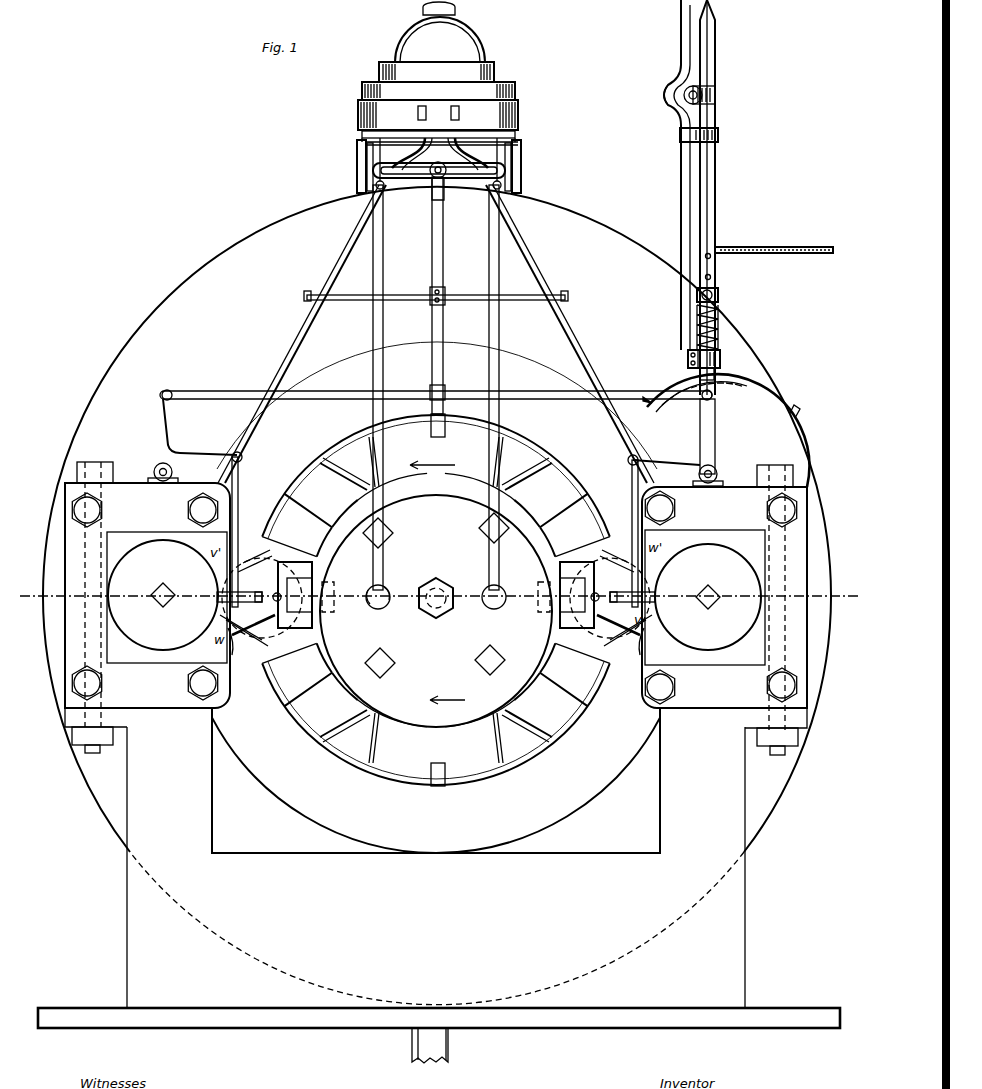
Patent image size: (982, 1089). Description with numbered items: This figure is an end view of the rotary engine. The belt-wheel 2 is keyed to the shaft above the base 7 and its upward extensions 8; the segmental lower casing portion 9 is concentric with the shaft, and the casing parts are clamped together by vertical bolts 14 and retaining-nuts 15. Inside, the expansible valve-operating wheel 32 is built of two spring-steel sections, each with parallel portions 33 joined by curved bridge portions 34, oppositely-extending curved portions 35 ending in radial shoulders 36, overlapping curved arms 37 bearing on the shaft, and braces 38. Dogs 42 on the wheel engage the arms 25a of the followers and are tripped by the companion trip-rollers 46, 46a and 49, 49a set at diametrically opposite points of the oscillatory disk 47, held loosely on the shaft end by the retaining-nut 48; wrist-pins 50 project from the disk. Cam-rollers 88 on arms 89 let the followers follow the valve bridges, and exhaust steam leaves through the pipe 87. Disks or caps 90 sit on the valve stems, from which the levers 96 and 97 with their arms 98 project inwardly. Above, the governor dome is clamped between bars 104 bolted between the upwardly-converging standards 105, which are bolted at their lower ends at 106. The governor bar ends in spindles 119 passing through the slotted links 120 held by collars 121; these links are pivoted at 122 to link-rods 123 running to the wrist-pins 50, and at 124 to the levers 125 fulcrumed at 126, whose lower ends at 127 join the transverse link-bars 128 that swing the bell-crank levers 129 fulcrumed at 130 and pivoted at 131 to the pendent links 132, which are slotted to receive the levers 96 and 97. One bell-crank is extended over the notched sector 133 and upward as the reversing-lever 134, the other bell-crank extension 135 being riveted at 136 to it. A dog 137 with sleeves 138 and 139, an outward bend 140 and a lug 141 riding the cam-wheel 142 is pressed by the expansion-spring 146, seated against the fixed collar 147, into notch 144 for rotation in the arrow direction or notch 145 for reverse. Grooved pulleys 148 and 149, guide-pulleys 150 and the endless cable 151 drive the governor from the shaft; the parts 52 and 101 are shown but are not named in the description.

The belt-wheel 2 is at (440, 597).
The base 7 is at (437, 596).
The upward extensions 8 is at (436, 867).
The lower portion of the engine-casing 9 is at (436, 780).
The vertical bolts 14 is at (93, 468).
The retaining-nuts 15 is at (78, 738).
The arms or extensions of the followers 25a is at (333, 598).
The expansible and contractible valve-operating wheel 32 is at (458, 782).
The parallel portions 33 is at (436, 600).
The curved bridge portions 34 is at (642, 595).
The oppositely-extending portions 35 is at (438, 600).
The radial ends or shoulders 36 is at (432, 600).
The curved arms 37 is at (440, 600).
The braces 38 is at (439, 610).
The dogs or hooks 42 is at (436, 598).
The trip-roller 46 is at (502, 533).
The trip-roller 46a is at (381, 672).
The oscillatory disk 47 is at (436, 611).
The retaining-nut 48 is at (436, 598).
The trip-roller 49 is at (368, 540).
The trip-roller 49a is at (490, 670).
The wrist or pivot pins 50 is at (366, 600).
The bolt 52 is at (434, 597).
The exhaust-pipe 87 is at (439, 1035).
The cam-rollers 88 is at (436, 546).
The arms 89 is at (245, 645).
The disks or caps 90 is at (436, 595).
The lever 96 is at (655, 597).
The lever 97 is at (217, 597).
The arm 98 is at (274, 594).
The dome 101 is at (440, 32).
The bars 104 is at (438, 100).
The upwardly-converging standards 105 is at (300, 326).
The brace-bars 106 is at (350, 299).
The cylindrical spindles 119 is at (446, 182).
The slotted links 120 is at (422, 178).
The collars or nuts 121 is at (444, 162).
The pivotal connection 122 is at (375, 185).
The link-rods 123 is at (373, 378).
The pivotal connection 124 is at (432, 225).
The levers of the second class 125 is at (444, 303).
The fulcrum 126 is at (430, 300).
The pivotal connection 127 is at (444, 392).
The transversely-extending link-bars 128 is at (322, 400).
The bell-crank levers 129 is at (160, 397).
The fulcrum 130 is at (160, 480).
The pivotal connection 131 is at (243, 457).
The pendent links 132 is at (238, 500).
The notched sector 133 is at (752, 390).
The reversing-lever 134 is at (716, 185).
The bell-crank extension 135 is at (774, 242).
The rivets 136 is at (712, 258).
The dog 137 is at (681, 220).
The upper sleeve 138 is at (719, 135).
The lower sleeve 139 is at (721, 358).
The semicircular bend 140 is at (666, 100).
The lug 141 is at (684, 92).
The cam-wheel 142 is at (712, 88).
The notch 144 is at (800, 410).
The notch 145 is at (648, 394).
The expansion-spring 146 is at (719, 324).
The fixed collar 147 is at (719, 295).
The grooved pulley 148 is at (690, 368).
The grooved pulley 149 is at (518, 138).
The guide-pulleys 150 is at (357, 145).
The endless belt or cable 151 is at (367, 160).